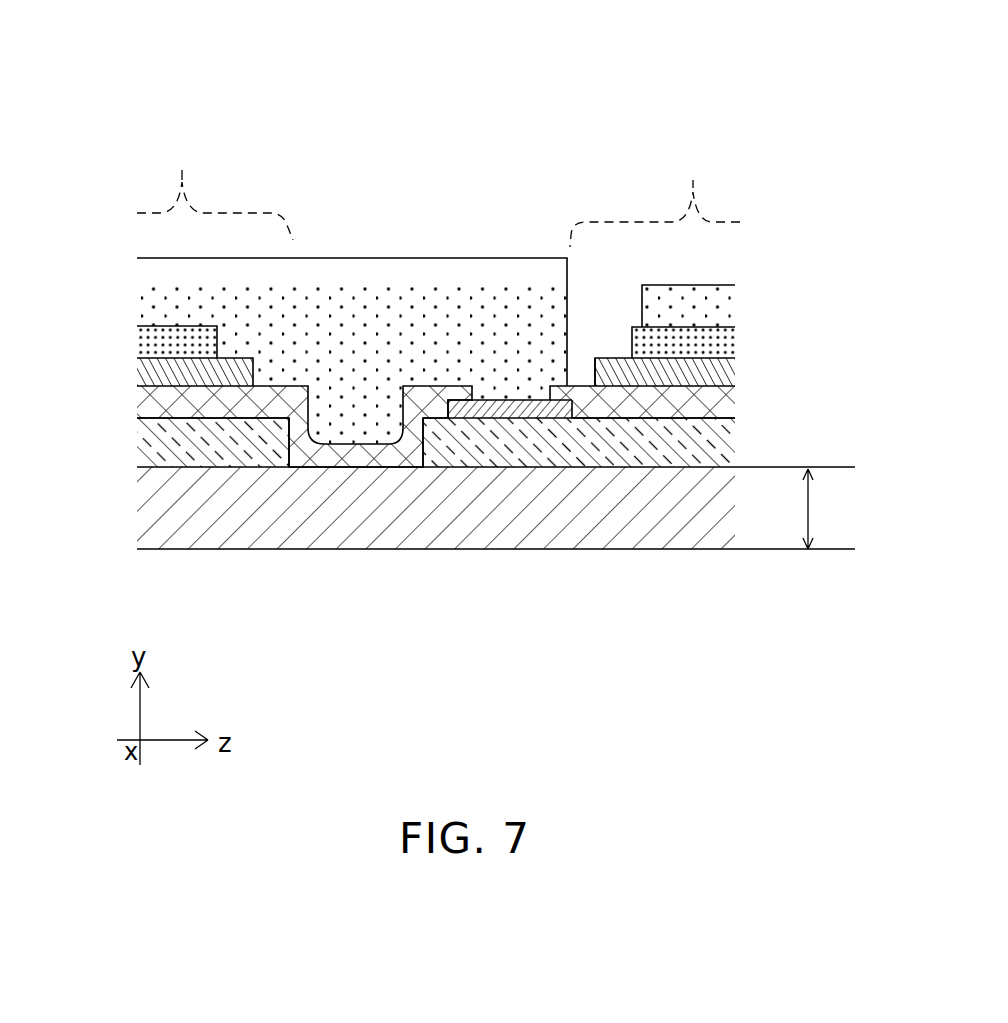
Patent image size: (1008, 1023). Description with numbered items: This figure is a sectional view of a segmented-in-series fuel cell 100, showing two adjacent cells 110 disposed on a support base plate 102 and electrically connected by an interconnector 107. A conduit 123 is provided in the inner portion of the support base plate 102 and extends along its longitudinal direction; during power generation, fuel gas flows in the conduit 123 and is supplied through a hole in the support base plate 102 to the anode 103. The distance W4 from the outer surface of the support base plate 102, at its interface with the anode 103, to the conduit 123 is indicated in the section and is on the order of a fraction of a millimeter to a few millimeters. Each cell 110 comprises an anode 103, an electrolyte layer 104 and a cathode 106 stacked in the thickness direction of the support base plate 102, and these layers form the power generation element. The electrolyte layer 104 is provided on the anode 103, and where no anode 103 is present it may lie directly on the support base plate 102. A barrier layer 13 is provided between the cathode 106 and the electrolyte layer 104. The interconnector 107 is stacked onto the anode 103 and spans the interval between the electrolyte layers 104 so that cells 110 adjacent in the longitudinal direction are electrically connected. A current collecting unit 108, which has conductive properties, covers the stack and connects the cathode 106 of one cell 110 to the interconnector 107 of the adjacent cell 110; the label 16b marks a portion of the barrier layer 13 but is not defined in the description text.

The segmented-in-series fuel cell 100 is at (297, 90).
The cell 110 is at (438, 194).
The current collecting unit 108 is at (358, 270).
The cathode 106 is at (165, 345).
The barrier layer 13 is at (165, 372).
The side surface 16b is at (615, 383).
The electrolyte layer 104 is at (165, 405).
The anode 103 is at (165, 440).
The interconnector 107 is at (428, 420).
The support base plate 102 is at (590, 537).
The conduit 123 is at (296, 601).
The distance from outer surface of support base plate to conduit W4 is at (832, 509).